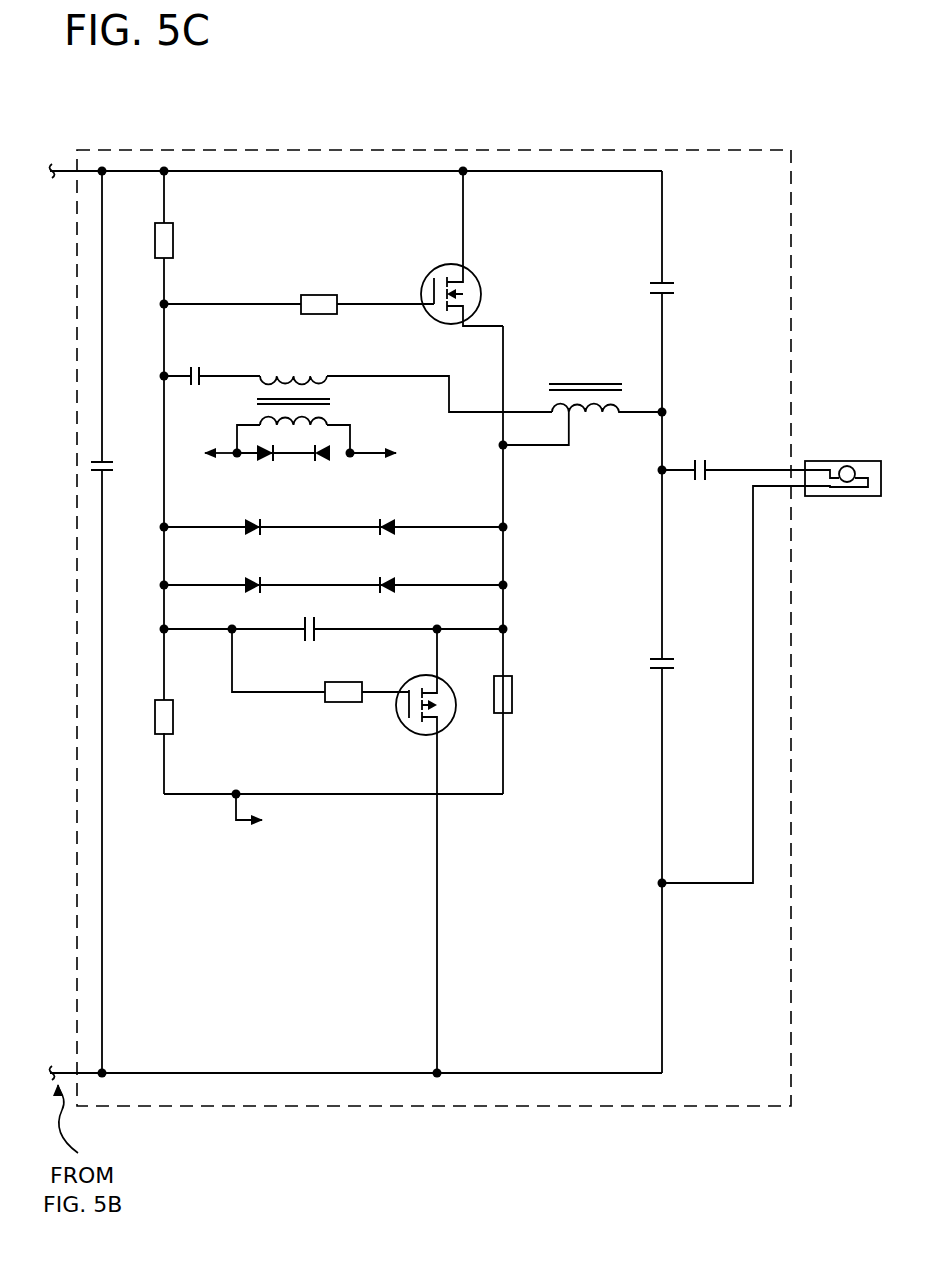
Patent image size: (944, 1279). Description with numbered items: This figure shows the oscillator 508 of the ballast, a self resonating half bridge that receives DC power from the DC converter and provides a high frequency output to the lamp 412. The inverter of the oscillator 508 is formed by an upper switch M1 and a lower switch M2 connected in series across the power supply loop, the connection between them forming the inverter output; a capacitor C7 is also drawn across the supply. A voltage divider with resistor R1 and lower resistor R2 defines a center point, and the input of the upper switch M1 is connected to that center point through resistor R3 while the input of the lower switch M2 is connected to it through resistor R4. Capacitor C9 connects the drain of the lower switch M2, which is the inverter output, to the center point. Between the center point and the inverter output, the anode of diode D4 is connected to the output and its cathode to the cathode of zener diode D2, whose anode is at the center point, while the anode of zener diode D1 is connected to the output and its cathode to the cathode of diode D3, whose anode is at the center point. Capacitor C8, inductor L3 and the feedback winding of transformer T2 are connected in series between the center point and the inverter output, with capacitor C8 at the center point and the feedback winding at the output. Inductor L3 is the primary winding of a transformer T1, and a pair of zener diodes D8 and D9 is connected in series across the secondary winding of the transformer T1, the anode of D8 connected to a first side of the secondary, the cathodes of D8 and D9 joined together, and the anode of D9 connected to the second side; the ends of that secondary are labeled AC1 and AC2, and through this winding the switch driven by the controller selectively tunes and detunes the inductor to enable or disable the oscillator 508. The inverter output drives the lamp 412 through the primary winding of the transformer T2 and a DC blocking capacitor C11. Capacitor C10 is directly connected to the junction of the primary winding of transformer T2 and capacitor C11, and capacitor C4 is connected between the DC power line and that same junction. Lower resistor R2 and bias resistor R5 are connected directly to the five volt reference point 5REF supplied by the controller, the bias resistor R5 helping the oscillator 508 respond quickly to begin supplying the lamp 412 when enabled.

The oscillator 508 is at (628, 150).
The lamp 412 is at (849, 461).
The resistor R1 is at (185, 240).
The lower resistor R2 is at (185, 717).
The resistor R3 is at (299, 290).
The resistor R4 is at (320, 682).
The bias resistor R5 is at (524, 694).
The capacitor C4 is at (649, 291).
The capacitor C7 is at (115, 622).
The capacitor C8 is at (212, 360).
The capacitor C9 is at (333, 640).
The capacitor C10 is at (684, 742).
The DC blocking capacitor C11 is at (733, 488).
The inductor L3 is at (293, 362).
The transformer T1 is at (303, 419).
The transformer T2 is at (494, 399).
The upper switch M1 is at (473, 248).
The lower switch M2 is at (440, 851).
The zener diode D1 is at (416, 517).
The zener diode D2 is at (247, 575).
The diode D3 is at (247, 517).
The diode D4 is at (416, 575).
The zener diode D8 is at (276, 470).
The zener diode D9 is at (331, 470).
The AC input terminal AC1 is at (203, 438).
The AC input terminal AC2 is at (392, 438).
The 5 volt reference point 5REF is at (292, 816).